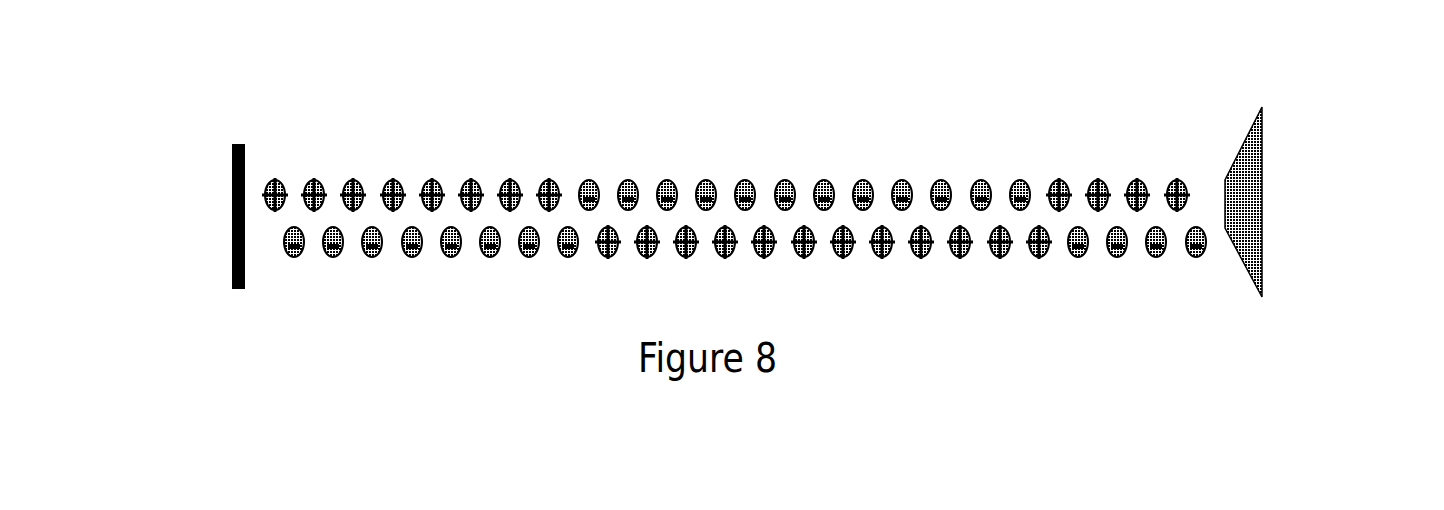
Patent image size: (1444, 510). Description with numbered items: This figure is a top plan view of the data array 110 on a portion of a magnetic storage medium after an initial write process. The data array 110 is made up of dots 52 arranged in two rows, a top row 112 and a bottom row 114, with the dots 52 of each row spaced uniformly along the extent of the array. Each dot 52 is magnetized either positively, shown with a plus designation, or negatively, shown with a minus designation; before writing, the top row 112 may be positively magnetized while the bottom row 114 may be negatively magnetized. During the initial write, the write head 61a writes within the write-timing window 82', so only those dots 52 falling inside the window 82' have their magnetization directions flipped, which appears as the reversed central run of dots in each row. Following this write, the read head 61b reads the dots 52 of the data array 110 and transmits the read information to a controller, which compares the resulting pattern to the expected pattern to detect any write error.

The data array 110 is at (440, 133).
The write-timing window 82' is at (810, 145).
The dots 52 is at (270, 210).
The write head 61a is at (1260, 197).
The read head 61b is at (232, 238).
The top row 112 is at (1192, 183).
The bottom row 114 is at (1213, 235).